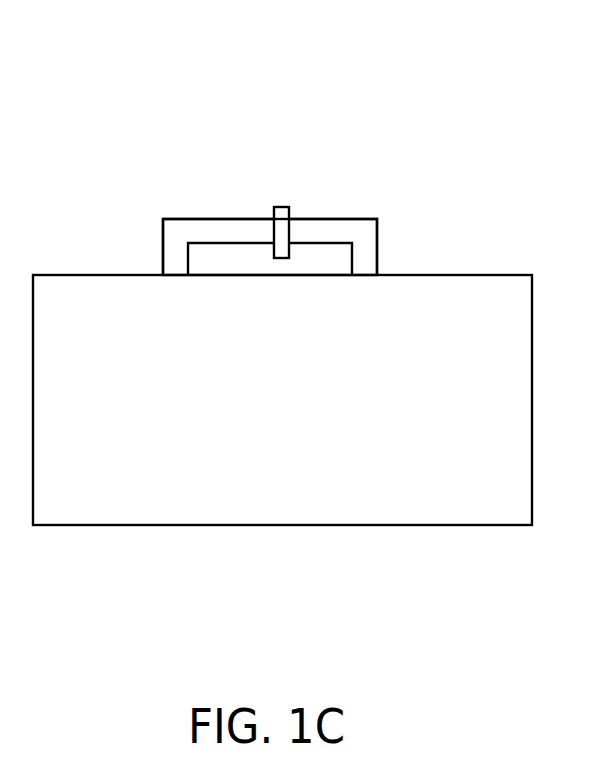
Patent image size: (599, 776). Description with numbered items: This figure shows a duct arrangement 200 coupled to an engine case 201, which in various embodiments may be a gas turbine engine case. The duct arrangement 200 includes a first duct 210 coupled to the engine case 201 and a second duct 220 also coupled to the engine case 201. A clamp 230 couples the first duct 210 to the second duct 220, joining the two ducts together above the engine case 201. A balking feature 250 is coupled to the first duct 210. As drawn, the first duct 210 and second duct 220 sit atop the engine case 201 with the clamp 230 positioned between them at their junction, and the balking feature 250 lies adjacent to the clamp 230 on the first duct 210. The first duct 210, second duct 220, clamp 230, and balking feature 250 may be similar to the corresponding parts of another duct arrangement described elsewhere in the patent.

The duct arrangement 200 is at (218, 128).
The engine case 201 is at (293, 426).
The first duct 210 is at (215, 227).
The second duct 220 is at (327, 227).
The clamp 230 is at (282, 204).
The balking feature 250 is at (273, 215).